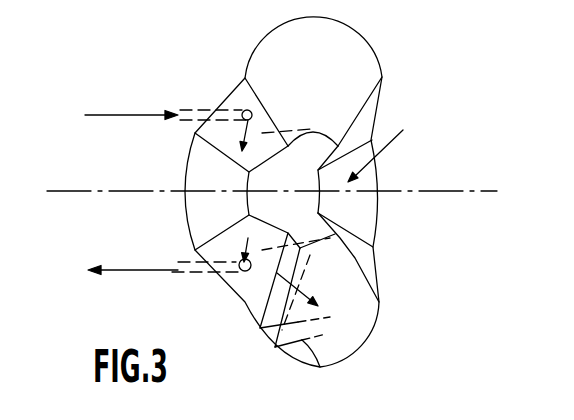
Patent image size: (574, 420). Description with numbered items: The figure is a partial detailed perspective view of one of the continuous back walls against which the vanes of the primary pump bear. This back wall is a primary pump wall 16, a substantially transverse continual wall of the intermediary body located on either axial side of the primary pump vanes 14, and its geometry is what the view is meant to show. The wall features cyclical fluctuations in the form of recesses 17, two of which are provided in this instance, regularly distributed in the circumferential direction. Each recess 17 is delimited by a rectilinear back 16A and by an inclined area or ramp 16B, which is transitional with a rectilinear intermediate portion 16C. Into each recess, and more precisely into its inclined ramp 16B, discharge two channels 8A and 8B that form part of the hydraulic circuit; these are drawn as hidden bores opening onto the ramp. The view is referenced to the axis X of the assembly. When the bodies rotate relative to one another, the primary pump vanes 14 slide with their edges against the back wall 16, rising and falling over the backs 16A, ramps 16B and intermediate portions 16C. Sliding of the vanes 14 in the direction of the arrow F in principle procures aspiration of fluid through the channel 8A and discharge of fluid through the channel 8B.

The primary pump wall 16 is at (357, 65).
The rectilinear back 16A is at (377, 147).
The inclined ramp 16B is at (367, 265).
The rectilinear intermediate portion 16C is at (347, 322).
The recess 17 is at (200, 211).
The primary pump vane 14 is at (320, 365).
The channel 8A is at (192, 115).
The channel 8B is at (197, 272).
The arrow F is at (312, 273).
The axis X- X is at (274, 191).